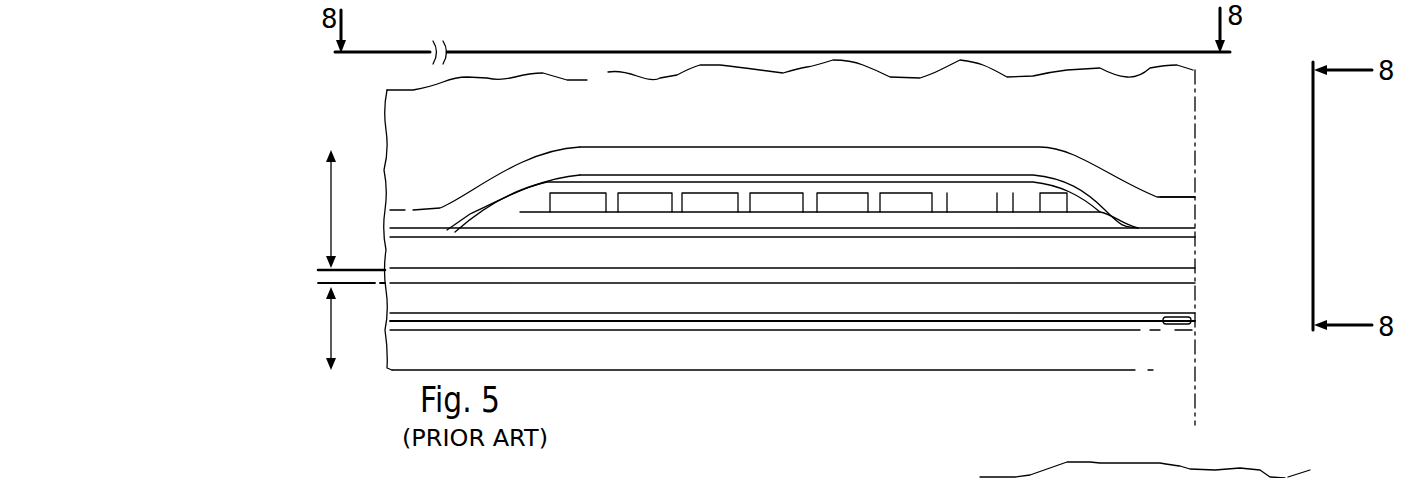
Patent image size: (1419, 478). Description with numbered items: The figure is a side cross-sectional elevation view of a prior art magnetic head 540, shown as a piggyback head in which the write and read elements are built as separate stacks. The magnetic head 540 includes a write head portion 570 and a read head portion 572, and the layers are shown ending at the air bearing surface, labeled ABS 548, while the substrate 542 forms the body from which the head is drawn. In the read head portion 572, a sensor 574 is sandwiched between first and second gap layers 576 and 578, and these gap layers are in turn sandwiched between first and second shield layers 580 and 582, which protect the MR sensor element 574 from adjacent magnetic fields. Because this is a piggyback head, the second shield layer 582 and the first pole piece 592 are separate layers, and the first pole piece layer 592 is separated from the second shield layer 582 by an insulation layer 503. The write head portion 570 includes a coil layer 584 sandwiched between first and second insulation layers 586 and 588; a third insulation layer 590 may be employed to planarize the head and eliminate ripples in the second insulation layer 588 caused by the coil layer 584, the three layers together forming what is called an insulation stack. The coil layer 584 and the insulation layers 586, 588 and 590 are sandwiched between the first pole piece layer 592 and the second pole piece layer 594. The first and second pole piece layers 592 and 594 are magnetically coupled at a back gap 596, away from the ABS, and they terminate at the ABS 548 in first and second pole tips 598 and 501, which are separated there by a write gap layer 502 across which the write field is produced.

The magnetic head 540 is at (362, 100).
The substrate 542 is at (1180, 100).
The air bearing surface (ABS) 548 is at (1195, 415).
The write head portion 570 is at (328, 213).
The read head portion 572 is at (328, 333).
The sensor 574 is at (1193, 322).
The first gap layer 576 is at (848, 328).
The second gap layer 578 is at (823, 313).
The first shield layer 580 is at (983, 355).
The second shield layer 582 is at (1053, 303).
The coil layer 584 is at (840, 198).
The first insulation layer 586 is at (747, 222).
The second insulation layer 588 is at (1087, 197).
The third insulation layer 590 is at (619, 178).
The first pole piece layer 592 is at (1110, 258).
The second pole piece layer 594 is at (976, 158).
The back gap 596 is at (420, 209).
The first pole tip 598 is at (1195, 255).
The second pole tip 501 is at (1190, 208).
The write gap layer 502 is at (1195, 230).
The insulation layer 503 is at (676, 280).